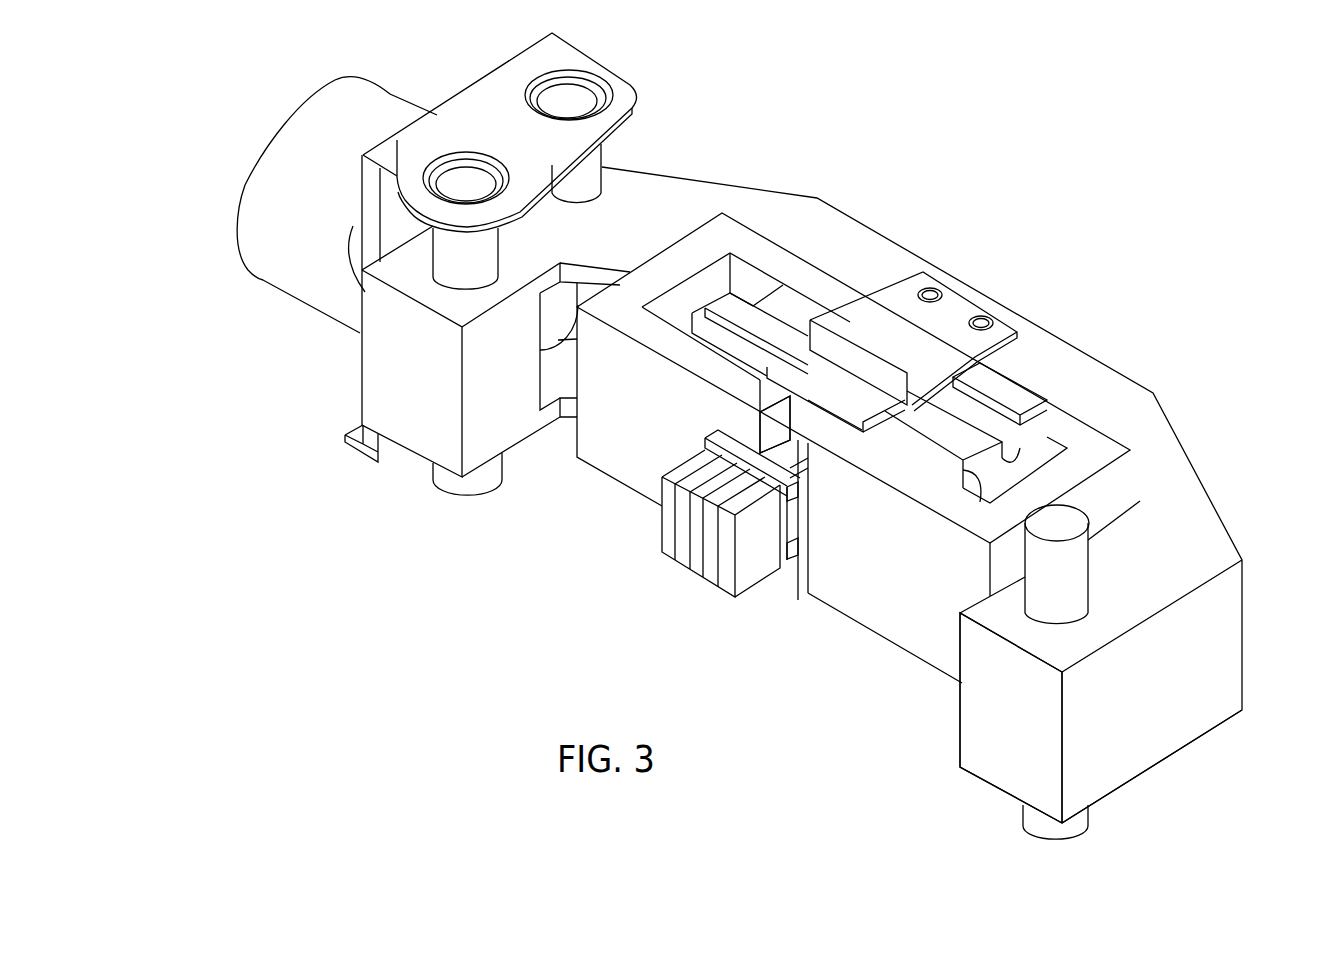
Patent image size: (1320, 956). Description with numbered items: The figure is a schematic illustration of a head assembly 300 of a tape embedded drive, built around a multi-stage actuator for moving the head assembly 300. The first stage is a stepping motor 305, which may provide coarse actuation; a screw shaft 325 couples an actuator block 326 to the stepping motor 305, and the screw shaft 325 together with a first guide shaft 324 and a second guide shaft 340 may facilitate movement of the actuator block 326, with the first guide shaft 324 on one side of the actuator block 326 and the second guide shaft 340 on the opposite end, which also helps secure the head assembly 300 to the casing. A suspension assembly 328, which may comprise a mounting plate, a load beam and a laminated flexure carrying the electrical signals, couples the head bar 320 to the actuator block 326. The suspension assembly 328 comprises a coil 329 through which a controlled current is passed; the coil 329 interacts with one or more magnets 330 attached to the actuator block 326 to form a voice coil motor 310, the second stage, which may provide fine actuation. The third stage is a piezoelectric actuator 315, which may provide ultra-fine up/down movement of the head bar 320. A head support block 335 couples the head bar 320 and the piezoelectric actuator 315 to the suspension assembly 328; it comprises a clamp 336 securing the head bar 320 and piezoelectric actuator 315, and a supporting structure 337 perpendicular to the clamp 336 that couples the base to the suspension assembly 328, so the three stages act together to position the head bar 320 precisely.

The head assembly 300 is at (1110, 174).
The stepping motor 305 is at (257, 149).
The voice coil motor 310 is at (1190, 358).
The piezoelectric actuator 315 is at (787, 553).
The head bar 320 is at (697, 574).
The guide shaft 324 is at (460, 268).
The screw shaft 325 is at (606, 153).
The actuator block 326 is at (1147, 755).
The suspension assembly 328 is at (890, 327).
The coil 329 is at (1005, 470).
The magnet 330 is at (980, 413).
The head support block 335 is at (807, 492).
The clamp 336 is at (707, 426).
The supporting structure 337 is at (757, 423).
The second guide shaft 340 is at (1090, 558).